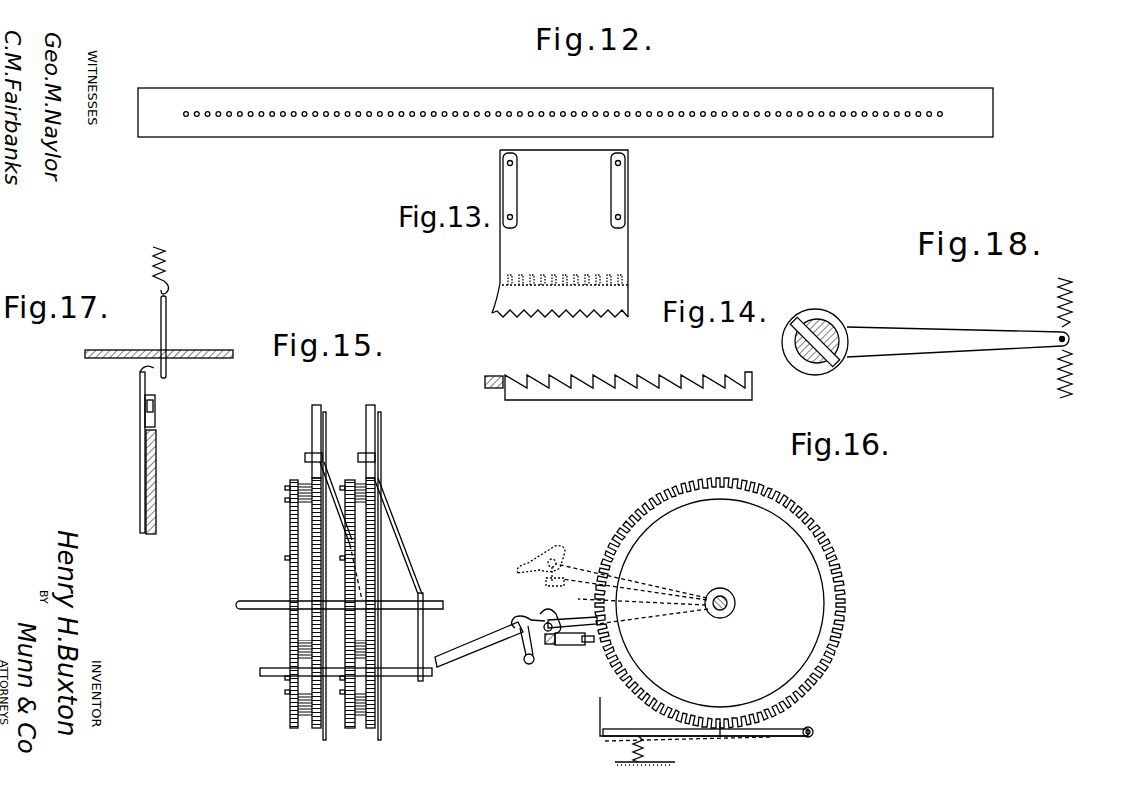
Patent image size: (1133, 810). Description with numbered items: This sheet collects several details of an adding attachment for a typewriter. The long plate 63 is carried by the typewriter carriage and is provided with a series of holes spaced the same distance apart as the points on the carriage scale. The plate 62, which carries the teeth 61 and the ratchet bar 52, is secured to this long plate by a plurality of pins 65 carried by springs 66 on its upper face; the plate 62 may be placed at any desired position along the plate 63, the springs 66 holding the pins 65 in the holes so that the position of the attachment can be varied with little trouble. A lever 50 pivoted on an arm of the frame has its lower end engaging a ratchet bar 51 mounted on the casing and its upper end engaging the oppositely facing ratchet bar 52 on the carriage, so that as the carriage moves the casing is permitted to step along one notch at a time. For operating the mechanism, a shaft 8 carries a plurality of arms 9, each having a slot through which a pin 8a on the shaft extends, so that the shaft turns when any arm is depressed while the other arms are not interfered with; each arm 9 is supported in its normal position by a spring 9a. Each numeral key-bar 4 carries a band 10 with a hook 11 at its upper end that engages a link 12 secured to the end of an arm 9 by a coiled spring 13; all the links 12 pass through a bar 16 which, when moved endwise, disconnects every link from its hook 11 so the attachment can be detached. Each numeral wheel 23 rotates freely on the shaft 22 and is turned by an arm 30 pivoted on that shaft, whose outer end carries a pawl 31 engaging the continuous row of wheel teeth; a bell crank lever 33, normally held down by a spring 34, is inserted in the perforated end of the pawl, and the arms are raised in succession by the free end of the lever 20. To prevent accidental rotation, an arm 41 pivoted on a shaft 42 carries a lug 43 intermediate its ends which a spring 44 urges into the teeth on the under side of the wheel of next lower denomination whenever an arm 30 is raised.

In FIG. 12, the plate 63 is at (922, 128).
In FIG. 13, the plate 62 is at (616, 247).
In FIG. 13, the teeth 61 is at (615, 278).
In FIG. 13, the ratchet bar 52 is at (492, 315).
In FIG. 13, the pins 65 is at (514, 163).
In FIG. 13, the springs 66 is at (518, 200).
In FIG. 17, the coiled spring 13 is at (166, 257).
In FIG. 18, the coiled spring 13 is at (1057, 383).
In FIG. 17, the link 12 is at (168, 319).
In FIG. 17, the bar 16 is at (221, 350).
In FIG. 17, the hook 11 is at (140, 375).
In FIG. 17, the band 10 is at (156, 427).
In FIG. 17, the key-bars 4 is at (146, 496).
In FIG. 15, the numeral wheel 23 is at (308, 718).
In FIG. 16, the numeral wheel 23 is at (805, 556).
In FIG. 15, the shaft 22 is at (437, 600).
In FIG. 16, the shaft 22 is at (736, 603).
In FIG. 15, the shaft 42 is at (403, 677).
In FIG. 16, the shaft 42 is at (815, 731).
In FIG. 15, the arms 41 is at (330, 478).
In FIG. 16, the arms 41 is at (777, 737).
In FIG. 14, the ratchet bar 51 is at (614, 401).
In FIG. 14, the lever 50 is at (484, 382).
In FIG. 18, the arms 9 is at (934, 337).
In FIG. 18, the shaft 8 is at (830, 329).
In FIG. 18, the pin 8a is at (798, 320).
In FIG. 18, the spring 9a is at (1073, 301).
In FIG. 16, the spring 34 is at (548, 614).
In FIG. 16, the lever 20 is at (484, 658).
In FIG. 16, the bell crank lever 33 is at (519, 623).
In FIG. 16, the arms 30 is at (578, 620).
In FIG. 16, the pawl 31 is at (590, 645).
In FIG. 16, the lug 43 is at (720, 738).
In FIG. 16, the spring 44 is at (635, 751).